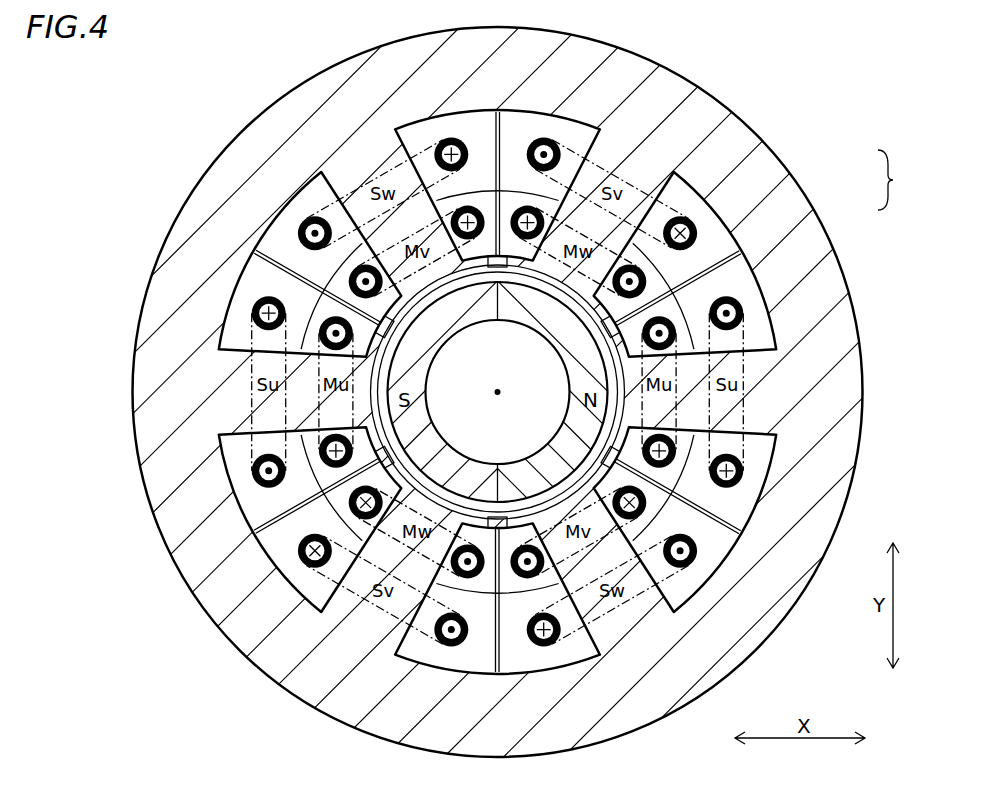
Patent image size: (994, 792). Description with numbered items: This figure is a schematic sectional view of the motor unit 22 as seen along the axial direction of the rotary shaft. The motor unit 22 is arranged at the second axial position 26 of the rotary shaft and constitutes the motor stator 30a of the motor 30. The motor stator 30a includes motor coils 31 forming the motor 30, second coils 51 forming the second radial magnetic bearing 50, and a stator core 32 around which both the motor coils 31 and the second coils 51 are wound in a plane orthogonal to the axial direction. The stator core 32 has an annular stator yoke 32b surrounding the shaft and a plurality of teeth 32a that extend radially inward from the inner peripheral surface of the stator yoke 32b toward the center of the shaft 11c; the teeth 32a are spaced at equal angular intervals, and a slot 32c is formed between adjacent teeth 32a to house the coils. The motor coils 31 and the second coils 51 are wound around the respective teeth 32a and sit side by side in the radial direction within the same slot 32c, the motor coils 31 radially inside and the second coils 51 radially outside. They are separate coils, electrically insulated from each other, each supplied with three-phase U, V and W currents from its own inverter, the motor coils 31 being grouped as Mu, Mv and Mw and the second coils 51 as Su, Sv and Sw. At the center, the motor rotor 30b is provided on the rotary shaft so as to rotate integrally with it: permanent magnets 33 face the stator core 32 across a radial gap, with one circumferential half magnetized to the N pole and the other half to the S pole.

The motor unit 22 is at (163, 110).
The second axial position 26 is at (163, 158).
The motor 30 is at (899, 180).
The motor stator 30a is at (787, 193).
The motor rotor 30b is at (740, 253).
The motor coils 31 is at (346, 280).
The stator core 32 is at (133, 337).
The teeth 32a is at (242, 402).
The stator yoke 32b is at (197, 510).
The slot 32c is at (220, 450).
The permanent magnets 33 is at (413, 418).
The second radial magnetic bearing 50 is at (764, 358).
The second coils 51 is at (254, 305).
The shaft 11c is at (538, 381).